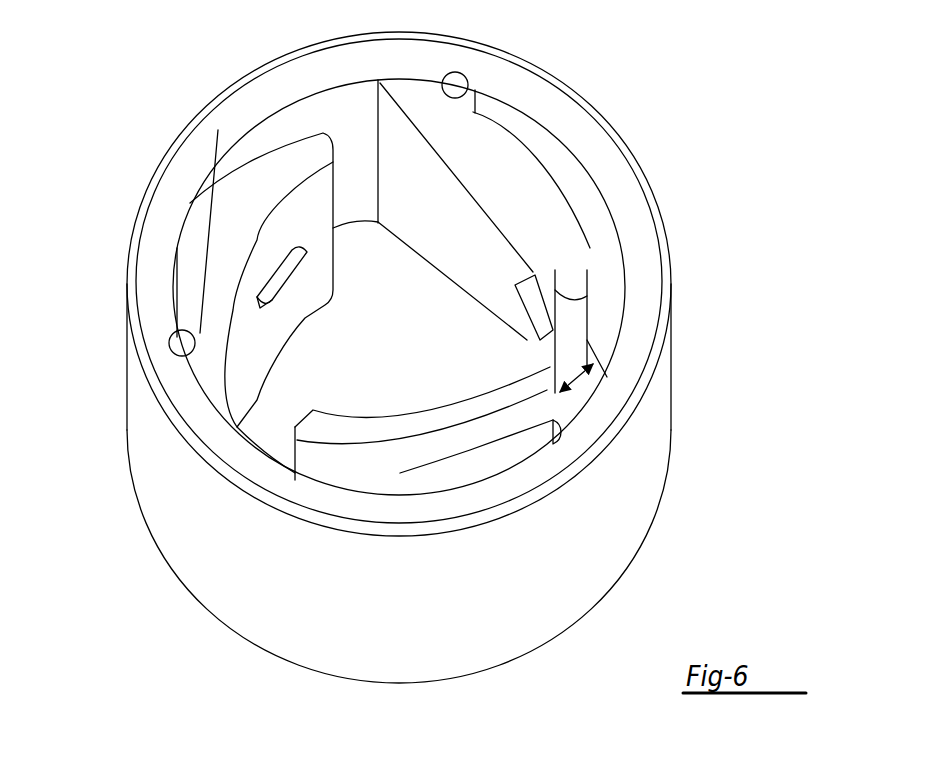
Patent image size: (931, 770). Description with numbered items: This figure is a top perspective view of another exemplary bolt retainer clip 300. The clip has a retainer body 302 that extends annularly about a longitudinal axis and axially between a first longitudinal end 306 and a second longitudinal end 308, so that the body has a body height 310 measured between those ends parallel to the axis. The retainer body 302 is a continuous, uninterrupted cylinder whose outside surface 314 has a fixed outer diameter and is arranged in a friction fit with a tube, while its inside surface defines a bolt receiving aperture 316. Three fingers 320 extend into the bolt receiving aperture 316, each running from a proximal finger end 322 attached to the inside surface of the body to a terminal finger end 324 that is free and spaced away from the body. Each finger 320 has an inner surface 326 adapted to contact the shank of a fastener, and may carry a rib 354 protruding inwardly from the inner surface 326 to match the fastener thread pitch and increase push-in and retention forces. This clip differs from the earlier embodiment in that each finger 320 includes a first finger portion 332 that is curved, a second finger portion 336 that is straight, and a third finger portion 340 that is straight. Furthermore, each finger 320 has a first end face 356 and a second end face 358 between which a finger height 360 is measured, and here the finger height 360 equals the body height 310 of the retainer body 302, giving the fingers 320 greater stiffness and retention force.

The bolt retainer clip 300 is at (134, 109).
The retainer body 302 is at (183, 197).
The first longitudinal end 306 is at (553, 103).
The second longitudinal end 308 is at (617, 580).
The body height 310 is at (683, 270).
The outside surface 314 is at (222, 552).
The bolt receiving aperture 316 is at (303, 389).
The finger 320 is at (482, 131).
The proximal finger end 322 is at (407, 120).
The terminal finger end 324 is at (573, 313).
The inner surface 326 is at (473, 197).
The first finger portion 332 is at (420, 413).
The second finger portion 336 is at (557, 403).
The third finger portion 340 is at (587, 398).
The rib 354 is at (270, 288).
The first end face 356 is at (241, 228).
The second end face 358 is at (433, 263).
The finger height 360 is at (378, 117).